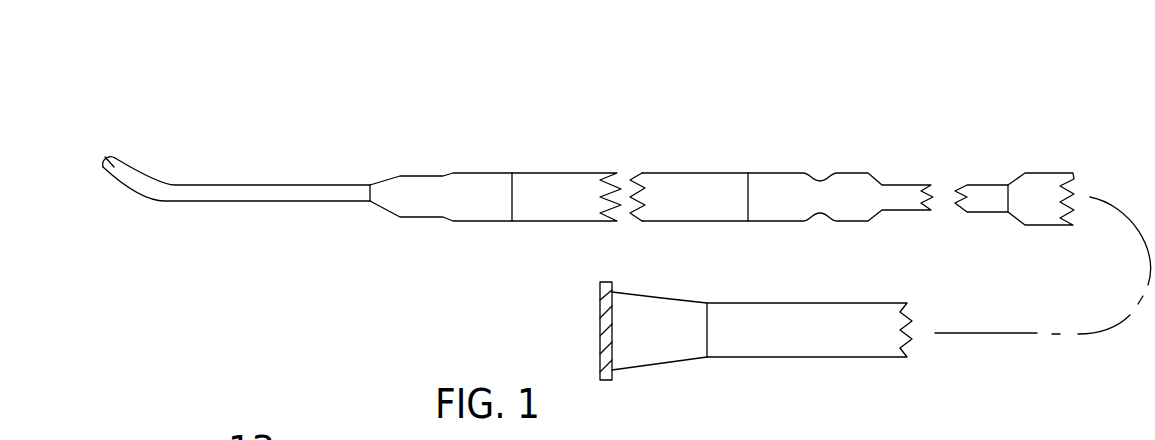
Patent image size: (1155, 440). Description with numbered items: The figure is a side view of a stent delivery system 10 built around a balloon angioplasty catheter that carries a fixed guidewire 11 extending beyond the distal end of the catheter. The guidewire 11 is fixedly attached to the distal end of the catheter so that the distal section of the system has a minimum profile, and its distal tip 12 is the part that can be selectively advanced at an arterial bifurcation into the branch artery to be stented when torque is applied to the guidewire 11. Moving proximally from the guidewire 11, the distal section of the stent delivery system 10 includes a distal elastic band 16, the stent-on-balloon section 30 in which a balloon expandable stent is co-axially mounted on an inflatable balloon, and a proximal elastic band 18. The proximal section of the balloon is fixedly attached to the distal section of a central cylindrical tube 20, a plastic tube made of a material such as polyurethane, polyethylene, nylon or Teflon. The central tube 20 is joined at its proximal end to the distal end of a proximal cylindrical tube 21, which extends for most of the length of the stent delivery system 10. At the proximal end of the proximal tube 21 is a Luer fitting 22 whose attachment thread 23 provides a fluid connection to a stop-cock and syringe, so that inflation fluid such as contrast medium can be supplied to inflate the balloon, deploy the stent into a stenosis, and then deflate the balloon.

The stent delivery system 10 is at (668, 128).
The fixed guidewire 11 is at (208, 185).
The distal tip 12 is at (97, 152).
The distal elastic band 16 is at (433, 175).
The proximal elastic band 18 is at (790, 173).
The central cylindrical tube 20 is at (1000, 185).
The proximal cylindrical tube 21 is at (1052, 226).
The Luer fitting 22 is at (645, 373).
The attachment thread 23 is at (600, 357).
The stent-on-balloon section 30 is at (686, 222).